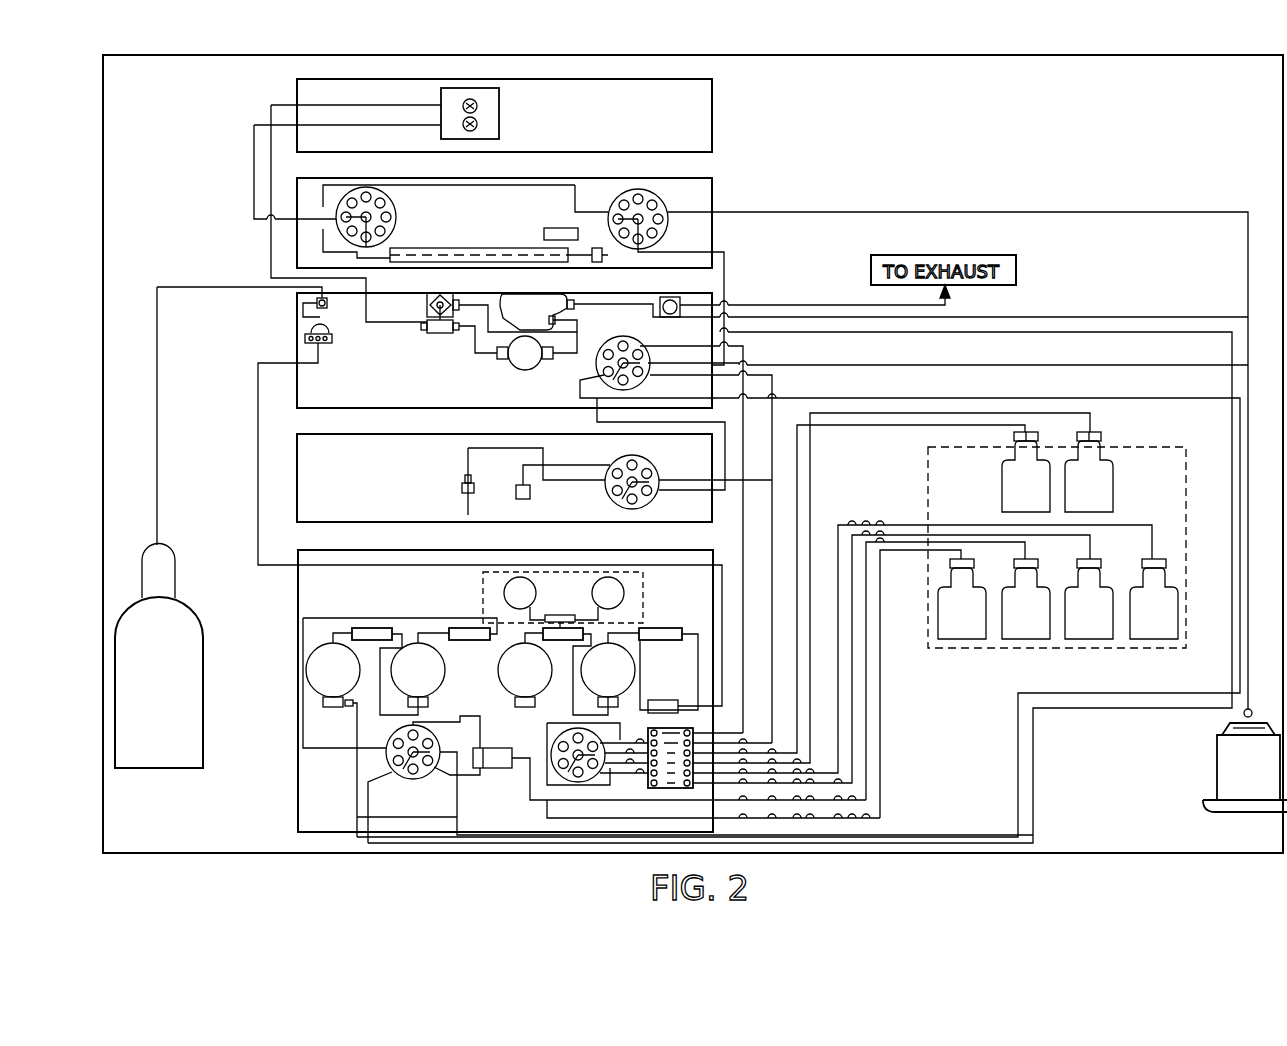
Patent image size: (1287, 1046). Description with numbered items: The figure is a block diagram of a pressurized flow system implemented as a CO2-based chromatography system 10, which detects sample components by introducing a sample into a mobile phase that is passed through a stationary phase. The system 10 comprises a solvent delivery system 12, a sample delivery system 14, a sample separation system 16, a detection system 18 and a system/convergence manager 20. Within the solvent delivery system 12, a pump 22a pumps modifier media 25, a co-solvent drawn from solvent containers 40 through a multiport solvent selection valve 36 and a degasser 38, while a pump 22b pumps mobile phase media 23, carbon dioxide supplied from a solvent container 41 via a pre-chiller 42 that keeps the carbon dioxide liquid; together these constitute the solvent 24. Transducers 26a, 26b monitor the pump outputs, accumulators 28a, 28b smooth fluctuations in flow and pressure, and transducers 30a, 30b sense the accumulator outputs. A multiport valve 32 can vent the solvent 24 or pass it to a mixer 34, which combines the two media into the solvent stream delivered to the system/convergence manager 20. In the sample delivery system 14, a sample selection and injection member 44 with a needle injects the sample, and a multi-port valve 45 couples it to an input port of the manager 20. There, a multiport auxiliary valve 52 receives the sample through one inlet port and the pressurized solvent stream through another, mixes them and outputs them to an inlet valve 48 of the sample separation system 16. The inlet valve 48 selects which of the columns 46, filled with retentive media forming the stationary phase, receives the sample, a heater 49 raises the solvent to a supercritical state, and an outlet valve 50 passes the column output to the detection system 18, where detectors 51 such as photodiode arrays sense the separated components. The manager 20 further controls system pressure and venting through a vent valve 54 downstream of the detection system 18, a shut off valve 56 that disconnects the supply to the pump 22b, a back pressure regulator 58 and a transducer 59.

The CO2-based chromatography system 10 is at (748, 55).
The solvent delivery system 12 is at (505, 691).
The sample delivery system 14 is at (504, 478).
The sample separation system 16 is at (504, 223).
The detection system 18 is at (504, 115).
The system/convergence manager 20 is at (504, 350).
The pump 22a is at (333, 735).
The pump 22b is at (525, 670).
The mobile phase media 23 is at (159, 682).
The solvent 24 is at (90, 620).
The modifier media 25 is at (1058, 535).
The transducer 26a is at (370, 628).
The transducer 26b is at (560, 628).
The accumulator 28a is at (420, 670).
The accumulator 28b is at (610, 670).
The transducer 30a is at (470, 640).
The transducer 30b is at (655, 628).
The multiport valve 32 is at (385, 755).
The mixer 34 is at (495, 770).
The multiport solvent selection valve 36 is at (580, 782).
The degasser 38 is at (695, 727).
The solvent container 40 is at (1040, 590).
The solvent container 41 is at (127, 588).
The pre-chiller 42 is at (645, 582).
The sample selection and injection member 44 is at (458, 480).
The multi-port valve 45 is at (648, 462).
The column 46 is at (476, 248).
The inlet valve 48 is at (672, 227).
The heater 49 is at (560, 228).
The outlet valve 50 is at (340, 196).
The detector 51 is at (500, 118).
The multiport auxiliary valve 52 is at (598, 372).
The vent valve 54 is at (425, 308).
The shut off valve 56 is at (328, 309).
The back pressure regulator 58 is at (874, 312).
The transducer 59 is at (512, 366).